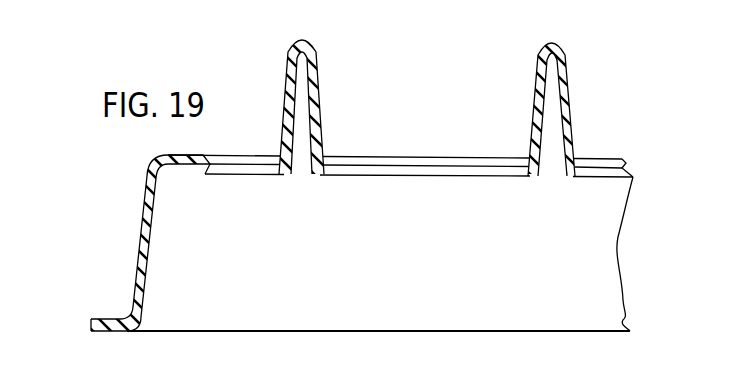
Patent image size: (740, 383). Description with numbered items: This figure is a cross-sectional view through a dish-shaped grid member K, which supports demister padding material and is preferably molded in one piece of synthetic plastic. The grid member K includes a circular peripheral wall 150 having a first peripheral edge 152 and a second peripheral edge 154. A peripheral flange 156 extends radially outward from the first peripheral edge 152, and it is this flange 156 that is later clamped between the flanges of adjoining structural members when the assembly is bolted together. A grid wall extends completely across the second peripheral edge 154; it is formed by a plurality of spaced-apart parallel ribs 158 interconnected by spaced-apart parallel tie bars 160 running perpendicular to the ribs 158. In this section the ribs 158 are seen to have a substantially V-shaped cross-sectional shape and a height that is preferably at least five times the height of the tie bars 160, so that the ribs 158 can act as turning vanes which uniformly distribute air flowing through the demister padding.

The grid member K is at (145, 193).
The circular peripheral wall 150 is at (145, 227).
The first peripheral edge 152 is at (130, 318).
The second peripheral edge 154 is at (167, 161).
The peripheral flange 156 is at (95, 334).
The ribs 158 is at (313, 70).
The tie bars 160 is at (401, 156).